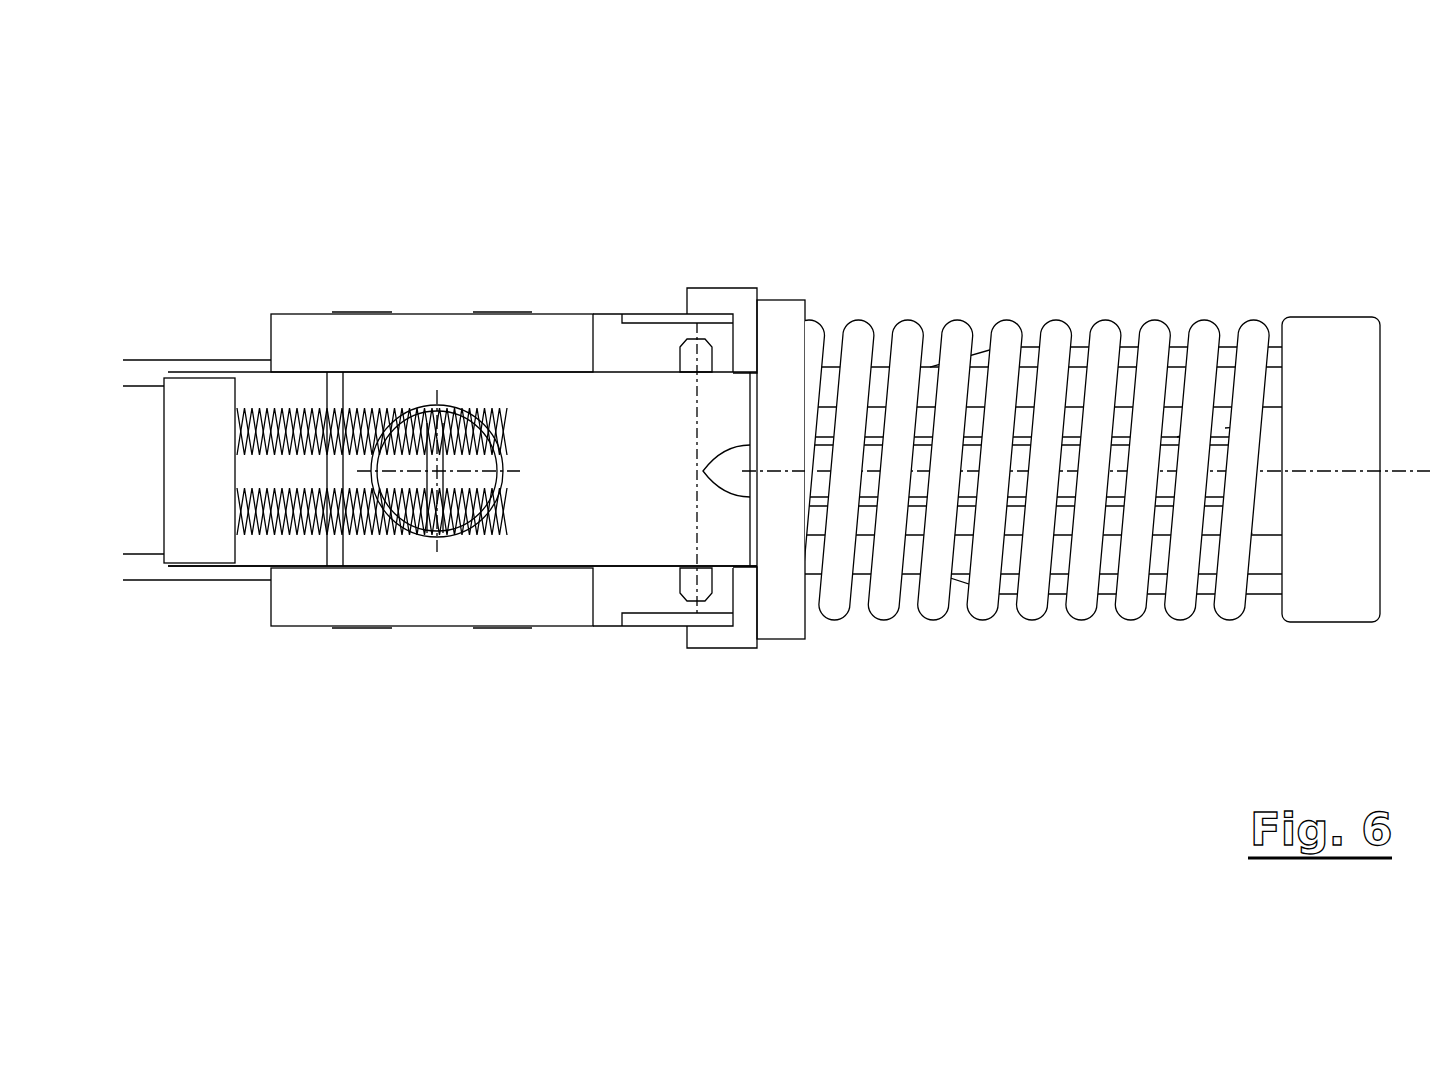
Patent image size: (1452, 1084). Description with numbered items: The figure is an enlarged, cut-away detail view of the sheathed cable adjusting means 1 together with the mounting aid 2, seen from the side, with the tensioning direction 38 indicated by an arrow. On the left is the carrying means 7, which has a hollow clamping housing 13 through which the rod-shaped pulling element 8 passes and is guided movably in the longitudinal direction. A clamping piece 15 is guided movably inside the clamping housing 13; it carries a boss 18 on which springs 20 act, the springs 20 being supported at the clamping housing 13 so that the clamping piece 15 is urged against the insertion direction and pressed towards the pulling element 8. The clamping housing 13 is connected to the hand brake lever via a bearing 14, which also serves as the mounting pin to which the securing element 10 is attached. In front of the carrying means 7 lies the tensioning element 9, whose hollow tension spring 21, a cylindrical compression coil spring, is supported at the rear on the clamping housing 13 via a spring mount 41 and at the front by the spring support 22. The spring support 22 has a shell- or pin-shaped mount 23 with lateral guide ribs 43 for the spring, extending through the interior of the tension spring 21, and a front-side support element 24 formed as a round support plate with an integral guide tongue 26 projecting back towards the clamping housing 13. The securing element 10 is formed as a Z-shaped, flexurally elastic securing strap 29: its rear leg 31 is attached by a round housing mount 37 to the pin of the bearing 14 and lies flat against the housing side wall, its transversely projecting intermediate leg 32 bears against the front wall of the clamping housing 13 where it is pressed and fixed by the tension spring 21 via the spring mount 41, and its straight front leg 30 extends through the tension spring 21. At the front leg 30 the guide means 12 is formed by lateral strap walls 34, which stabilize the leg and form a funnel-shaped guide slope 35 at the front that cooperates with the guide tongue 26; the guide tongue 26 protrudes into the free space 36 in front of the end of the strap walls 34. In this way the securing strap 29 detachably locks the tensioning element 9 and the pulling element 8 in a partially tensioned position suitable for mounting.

The sheathed cable adjusting means 1 is at (490, 207).
The mounting aid 2 is at (1020, 549).
The carrying means 7 is at (229, 593).
The pulling element 8 is at (138, 427).
The tensioning element 9 is at (1000, 618).
The securing element 10 is at (462, 563).
The guide means 12 is at (1146, 518).
The clamping housing 13 is at (411, 340).
The bearing 14 is at (463, 465).
The clamping piece 15 is at (684, 358).
The boss 18 is at (211, 432).
The springs 20 is at (307, 410).
The tension spring 21 is at (1002, 338).
The spring support 22 is at (1330, 625).
The mount 23 is at (1090, 383).
The support element 24 is at (1337, 477).
The guide tongue 26 is at (1247, 458).
The securing strap 29 is at (622, 570).
The front leg 30 is at (943, 463).
The rear leg 31 is at (549, 543).
The intermediate leg 32 is at (752, 428).
The strap walls 34 is at (1097, 505).
The guide slope 35 is at (1242, 518).
The free space 36 is at (1280, 432).
The housing mount 37 is at (500, 480).
The tensioning direction 38 is at (212, 827).
The spring mount 41 is at (780, 318).
The guide ribs 43 is at (1096, 578).